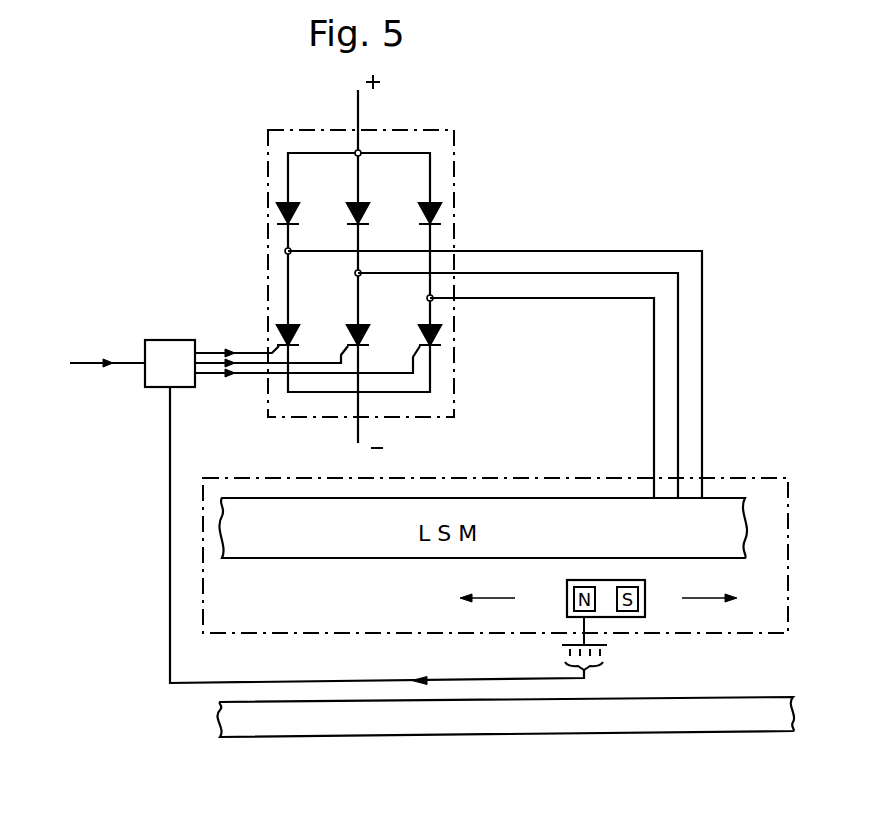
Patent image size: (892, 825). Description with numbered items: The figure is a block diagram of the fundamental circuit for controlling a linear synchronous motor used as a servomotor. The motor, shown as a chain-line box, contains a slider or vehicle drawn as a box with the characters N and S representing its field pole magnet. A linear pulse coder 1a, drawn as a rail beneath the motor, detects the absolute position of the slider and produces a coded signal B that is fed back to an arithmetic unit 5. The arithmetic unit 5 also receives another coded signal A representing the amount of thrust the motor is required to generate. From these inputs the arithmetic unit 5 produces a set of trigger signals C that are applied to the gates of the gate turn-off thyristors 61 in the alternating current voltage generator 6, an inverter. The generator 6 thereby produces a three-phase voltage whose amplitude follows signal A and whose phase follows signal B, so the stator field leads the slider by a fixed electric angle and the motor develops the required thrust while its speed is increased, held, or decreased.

The alternating current voltage generator 6 is at (455, 186).
The gate turn-off thyristors 61 is at (278, 207).
The arithmetic unit 5 is at (172, 340).
The coded signal A is at (90, 363).
The trigger signals C is at (228, 352).
The coded signal B is at (250, 683).
The pulse coder 1a is at (507, 735).